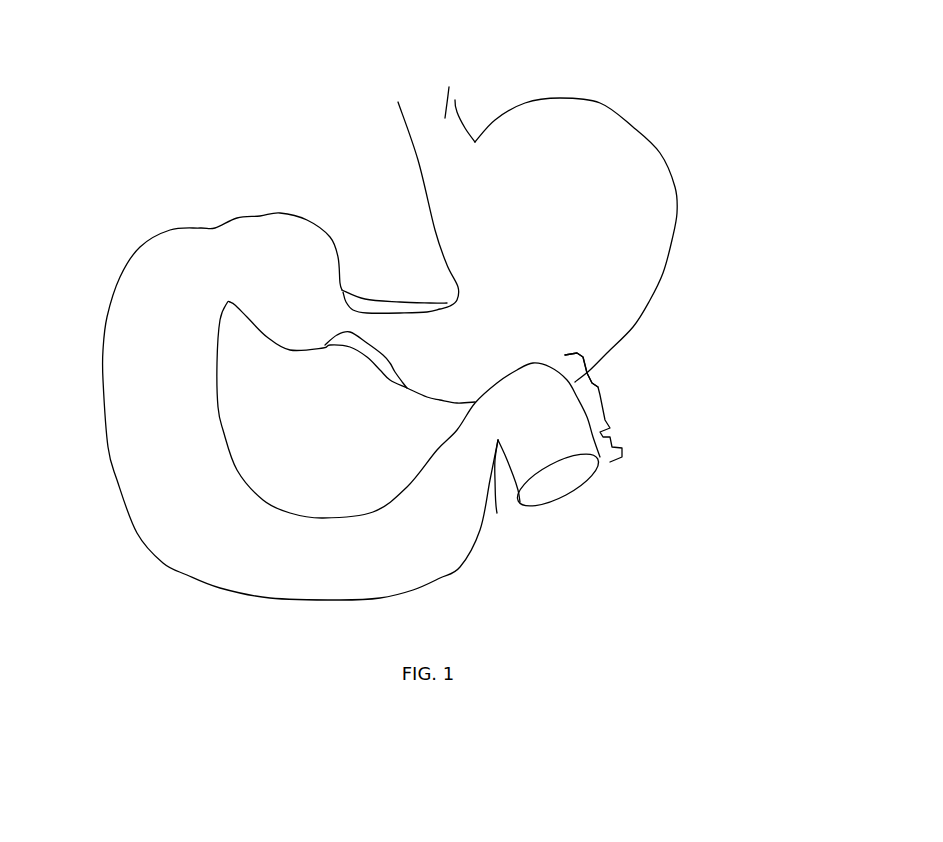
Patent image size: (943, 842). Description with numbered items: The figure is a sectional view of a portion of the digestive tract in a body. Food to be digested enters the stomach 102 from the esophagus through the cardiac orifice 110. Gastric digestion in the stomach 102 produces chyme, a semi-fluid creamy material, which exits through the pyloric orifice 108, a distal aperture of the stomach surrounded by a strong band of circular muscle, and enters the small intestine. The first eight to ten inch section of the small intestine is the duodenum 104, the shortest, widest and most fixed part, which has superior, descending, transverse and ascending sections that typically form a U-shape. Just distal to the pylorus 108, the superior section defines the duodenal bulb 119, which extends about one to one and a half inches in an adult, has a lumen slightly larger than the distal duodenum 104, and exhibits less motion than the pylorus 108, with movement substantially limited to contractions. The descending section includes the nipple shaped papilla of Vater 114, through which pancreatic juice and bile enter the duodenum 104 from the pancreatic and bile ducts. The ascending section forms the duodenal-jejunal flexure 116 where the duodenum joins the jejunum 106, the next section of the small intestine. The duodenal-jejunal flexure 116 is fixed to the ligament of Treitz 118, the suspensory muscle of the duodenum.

The stomach 102 is at (658, 242).
The duodenum 104 is at (192, 558).
The jejunum 106 is at (606, 434).
The pyloric orifice 108 is at (393, 328).
The cardiac orifice 110 is at (455, 100).
The papilla of Vater 114 is at (196, 432).
The duodenal-jejunal flexure 116 is at (600, 393).
The ligament of Treitz 118 is at (497, 513).
The duodenal bulb 119 is at (280, 213).